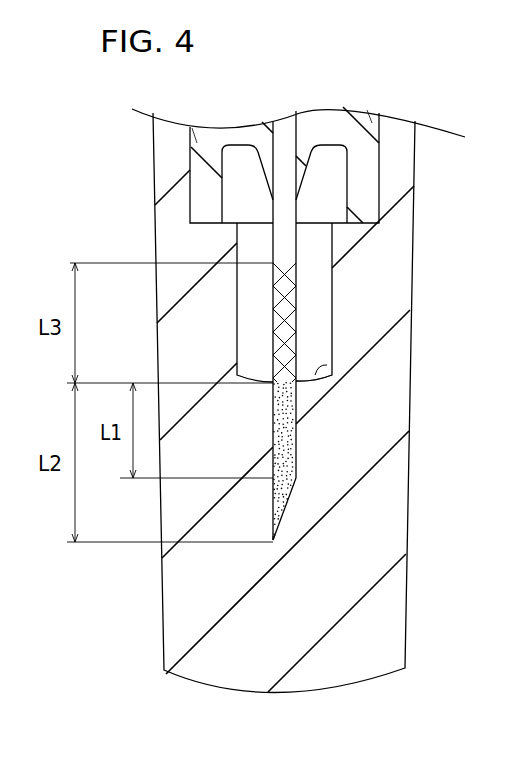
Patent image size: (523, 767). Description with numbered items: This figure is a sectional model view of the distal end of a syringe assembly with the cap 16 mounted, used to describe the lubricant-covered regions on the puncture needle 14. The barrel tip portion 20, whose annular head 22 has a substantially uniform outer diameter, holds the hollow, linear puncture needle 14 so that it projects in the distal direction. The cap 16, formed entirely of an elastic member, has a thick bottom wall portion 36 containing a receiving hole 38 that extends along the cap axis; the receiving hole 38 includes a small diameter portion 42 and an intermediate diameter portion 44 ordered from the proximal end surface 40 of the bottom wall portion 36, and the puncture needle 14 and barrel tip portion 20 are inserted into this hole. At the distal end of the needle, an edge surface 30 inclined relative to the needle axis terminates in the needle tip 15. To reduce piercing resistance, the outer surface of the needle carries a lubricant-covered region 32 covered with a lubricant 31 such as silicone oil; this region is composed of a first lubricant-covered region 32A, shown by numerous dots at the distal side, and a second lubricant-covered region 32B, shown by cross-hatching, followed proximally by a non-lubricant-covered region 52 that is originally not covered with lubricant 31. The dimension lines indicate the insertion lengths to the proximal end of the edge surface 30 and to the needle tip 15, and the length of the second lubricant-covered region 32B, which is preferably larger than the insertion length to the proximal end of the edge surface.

The puncture needle 14 is at (272, 431).
The needle tip 15 is at (273, 541).
The cap 16 is at (425, 220).
The barrel tip portion 20 is at (200, 165).
The annular head 22 is at (207, 189).
The edge surface 30 is at (287, 504).
The lubricant 31 is at (273, 330).
The lubricant-covered region 32 is at (396, 398).
The first lubricant-covered region 32A is at (297, 438).
The second lubricant-covered region 32B is at (293, 350).
The bottom wall portion 36 is at (378, 534).
The receiving hole 38 is at (397, 302).
The proximal end surface 40 is at (338, 372).
The small diameter portion 42 is at (314, 378).
The intermediate diameter portion 44 is at (381, 157).
The non-lubricant-covered region 52 is at (297, 237).